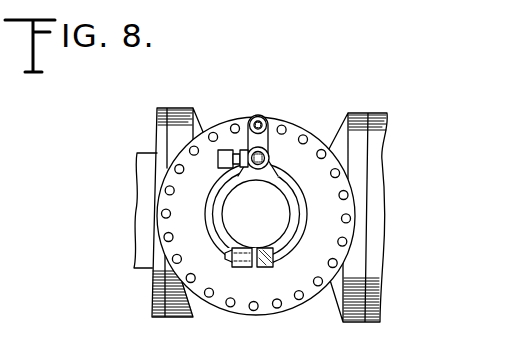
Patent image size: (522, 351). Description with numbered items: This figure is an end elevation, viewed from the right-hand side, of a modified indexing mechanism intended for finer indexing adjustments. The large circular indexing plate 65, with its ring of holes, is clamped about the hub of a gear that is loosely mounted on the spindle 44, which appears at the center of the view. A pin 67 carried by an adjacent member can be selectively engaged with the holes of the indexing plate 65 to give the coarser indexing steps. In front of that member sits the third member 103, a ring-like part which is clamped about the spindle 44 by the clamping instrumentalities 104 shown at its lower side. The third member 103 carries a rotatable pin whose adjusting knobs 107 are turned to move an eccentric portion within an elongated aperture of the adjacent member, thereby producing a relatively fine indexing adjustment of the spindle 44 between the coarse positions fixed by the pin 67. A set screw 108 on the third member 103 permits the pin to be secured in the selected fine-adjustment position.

The indexing plate 65 is at (287, 288).
The third member 103 is at (291, 209).
The spindle 44 is at (243, 215).
The pin 67 is at (258, 116).
The adjusting knobs 107 is at (270, 158).
The set screw 108 is at (220, 161).
The clamping instrumentalities 104 is at (231, 253).